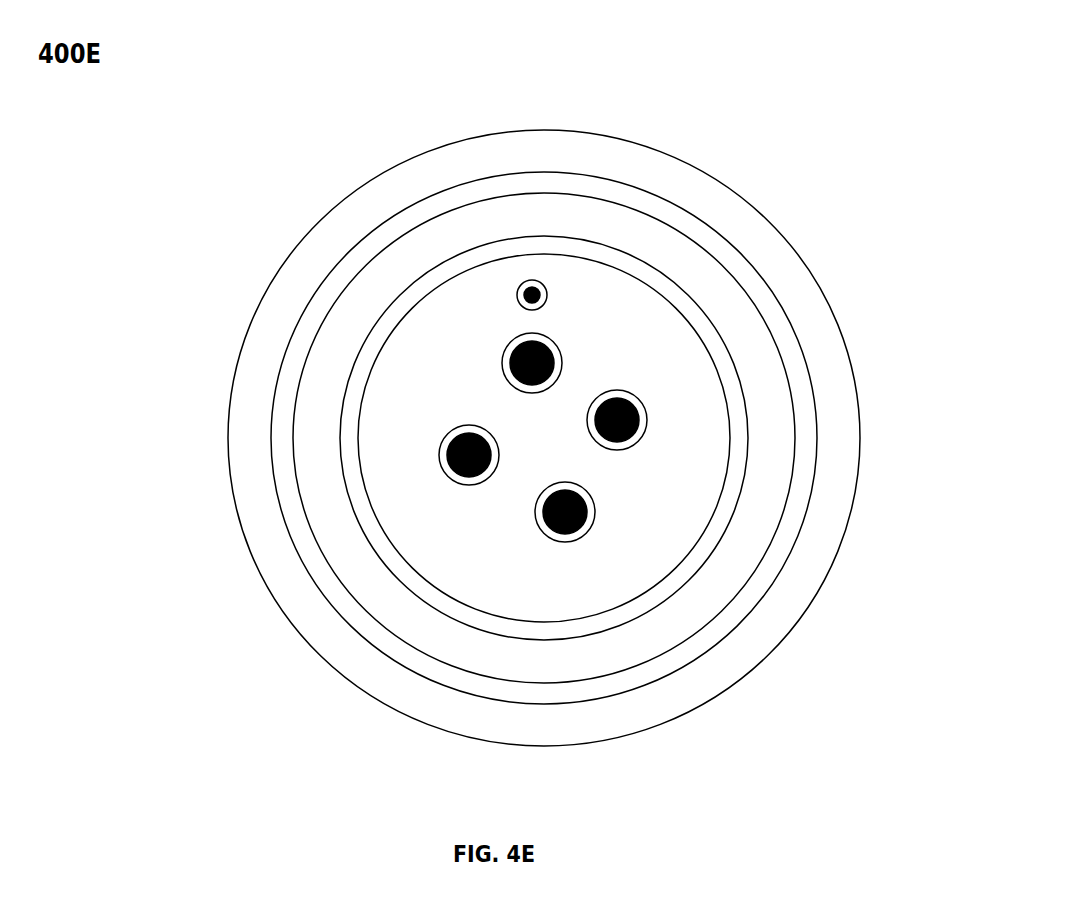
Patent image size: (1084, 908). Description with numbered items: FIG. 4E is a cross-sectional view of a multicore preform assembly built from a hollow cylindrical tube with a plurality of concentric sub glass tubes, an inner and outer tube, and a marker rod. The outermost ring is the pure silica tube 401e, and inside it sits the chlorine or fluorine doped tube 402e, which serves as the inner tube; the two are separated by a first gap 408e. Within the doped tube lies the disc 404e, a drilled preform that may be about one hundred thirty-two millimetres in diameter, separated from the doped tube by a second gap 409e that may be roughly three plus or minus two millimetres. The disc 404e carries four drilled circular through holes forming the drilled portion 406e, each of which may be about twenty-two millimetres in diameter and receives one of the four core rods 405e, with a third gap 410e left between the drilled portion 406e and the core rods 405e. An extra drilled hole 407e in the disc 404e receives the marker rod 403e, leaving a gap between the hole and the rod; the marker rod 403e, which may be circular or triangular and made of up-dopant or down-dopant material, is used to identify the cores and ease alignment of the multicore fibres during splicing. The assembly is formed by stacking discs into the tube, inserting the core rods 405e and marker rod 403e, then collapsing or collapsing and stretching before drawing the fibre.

The pure silica tube 401e is at (575, 157).
The chlorine or fluorine doped tube 402e is at (615, 227).
The marker rod 403e is at (546, 291).
The disc 404e is at (680, 372).
The core rods 405e is at (640, 442).
The drilled portion 406e is at (440, 467).
The drilled hole 407e is at (520, 304).
The first gap 408e is at (422, 212).
The second gap 409e is at (347, 422).
The third gap 410e is at (536, 505).